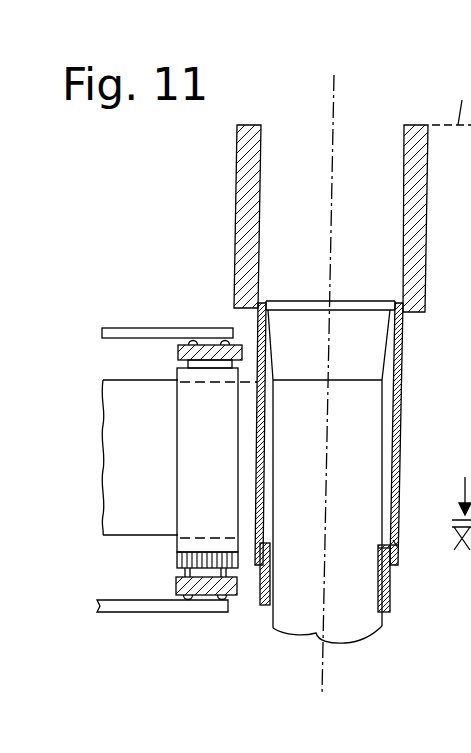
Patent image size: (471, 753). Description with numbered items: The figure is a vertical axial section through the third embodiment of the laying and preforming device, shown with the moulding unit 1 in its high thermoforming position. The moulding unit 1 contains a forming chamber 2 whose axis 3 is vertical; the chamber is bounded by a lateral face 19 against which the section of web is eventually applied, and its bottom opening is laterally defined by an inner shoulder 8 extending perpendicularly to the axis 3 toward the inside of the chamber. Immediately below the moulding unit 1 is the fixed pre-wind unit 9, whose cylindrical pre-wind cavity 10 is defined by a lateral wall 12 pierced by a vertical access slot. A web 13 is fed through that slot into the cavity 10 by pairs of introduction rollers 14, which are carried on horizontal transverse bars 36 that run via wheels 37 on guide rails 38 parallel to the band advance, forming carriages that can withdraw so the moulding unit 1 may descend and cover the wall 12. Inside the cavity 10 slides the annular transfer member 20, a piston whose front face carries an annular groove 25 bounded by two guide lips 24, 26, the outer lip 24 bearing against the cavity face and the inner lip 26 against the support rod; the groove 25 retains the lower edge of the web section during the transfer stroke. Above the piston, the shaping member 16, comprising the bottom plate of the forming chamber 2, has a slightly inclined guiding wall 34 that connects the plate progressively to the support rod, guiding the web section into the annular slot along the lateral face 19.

The moulding unit 1 is at (236, 219).
The forming chamber 2 is at (319, 187).
The axis 3 is at (338, 122).
The inner shoulder 8 is at (262, 290).
The pre-wind unit 9 is at (408, 368).
The pre-wind cavity 10 is at (388, 412).
The wall 12 is at (399, 450).
The web 13 is at (127, 515).
The conveyor rollers 14 is at (195, 450).
The shaping member 16 is at (350, 298).
The lateral face 19 is at (404, 146).
The transfer member 20 is at (392, 600).
The guide lip 24 is at (399, 536).
The annular groove 25 is at (396, 538).
The guide lip 26 is at (388, 548).
The guiding wall 34 is at (459, 444).
The horizontal transverse bars 36 is at (180, 345).
The wheels 37 is at (193, 341).
The guide rails 38 is at (118, 330).